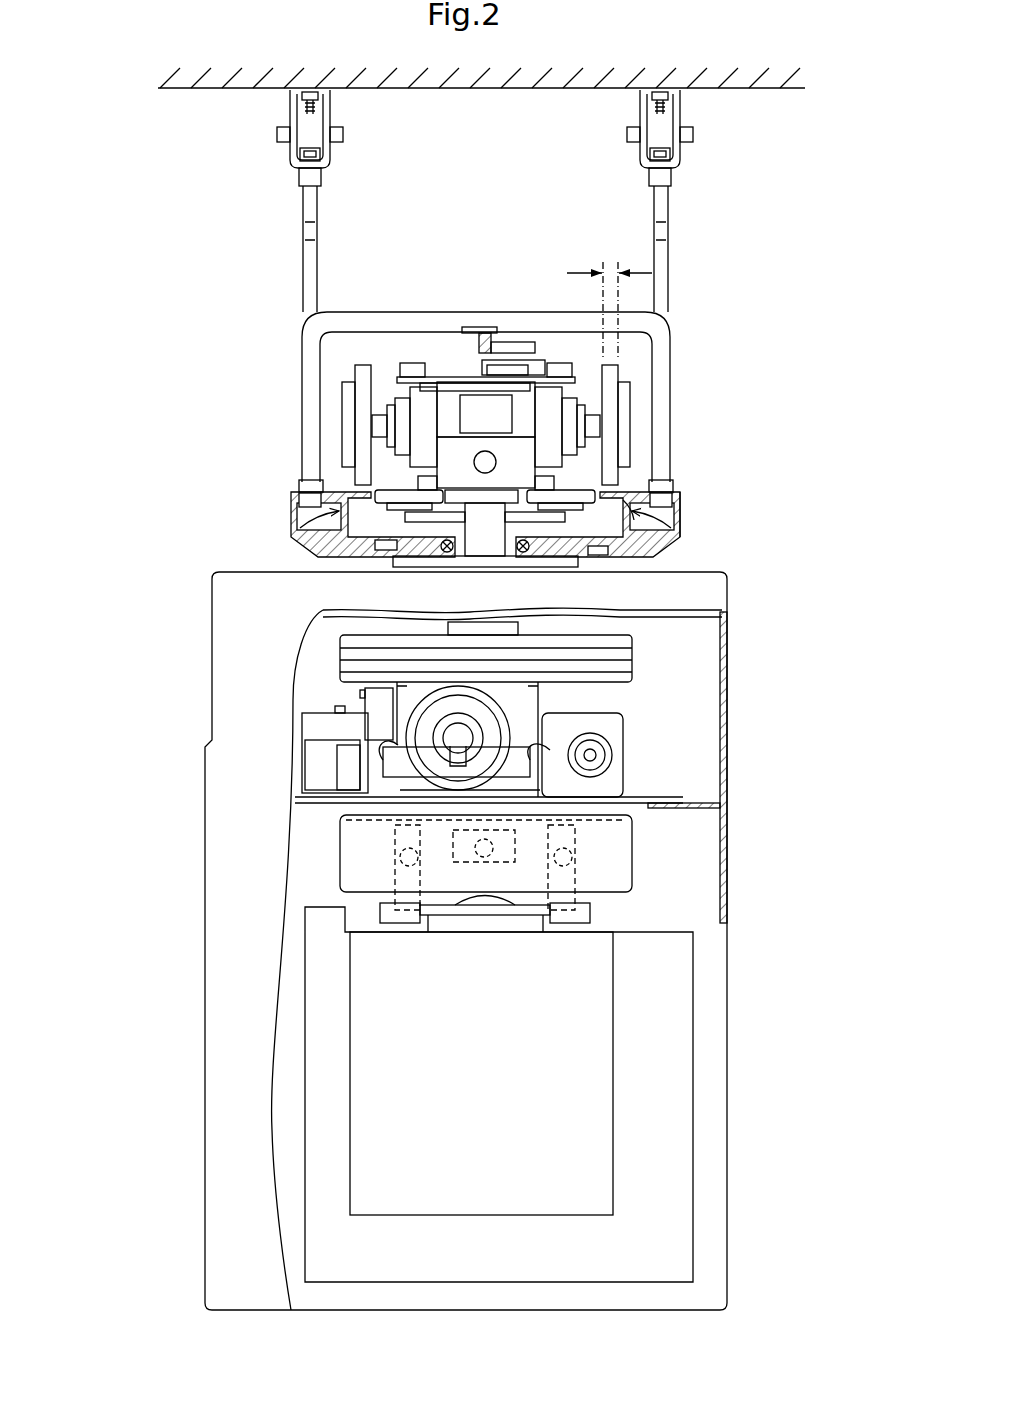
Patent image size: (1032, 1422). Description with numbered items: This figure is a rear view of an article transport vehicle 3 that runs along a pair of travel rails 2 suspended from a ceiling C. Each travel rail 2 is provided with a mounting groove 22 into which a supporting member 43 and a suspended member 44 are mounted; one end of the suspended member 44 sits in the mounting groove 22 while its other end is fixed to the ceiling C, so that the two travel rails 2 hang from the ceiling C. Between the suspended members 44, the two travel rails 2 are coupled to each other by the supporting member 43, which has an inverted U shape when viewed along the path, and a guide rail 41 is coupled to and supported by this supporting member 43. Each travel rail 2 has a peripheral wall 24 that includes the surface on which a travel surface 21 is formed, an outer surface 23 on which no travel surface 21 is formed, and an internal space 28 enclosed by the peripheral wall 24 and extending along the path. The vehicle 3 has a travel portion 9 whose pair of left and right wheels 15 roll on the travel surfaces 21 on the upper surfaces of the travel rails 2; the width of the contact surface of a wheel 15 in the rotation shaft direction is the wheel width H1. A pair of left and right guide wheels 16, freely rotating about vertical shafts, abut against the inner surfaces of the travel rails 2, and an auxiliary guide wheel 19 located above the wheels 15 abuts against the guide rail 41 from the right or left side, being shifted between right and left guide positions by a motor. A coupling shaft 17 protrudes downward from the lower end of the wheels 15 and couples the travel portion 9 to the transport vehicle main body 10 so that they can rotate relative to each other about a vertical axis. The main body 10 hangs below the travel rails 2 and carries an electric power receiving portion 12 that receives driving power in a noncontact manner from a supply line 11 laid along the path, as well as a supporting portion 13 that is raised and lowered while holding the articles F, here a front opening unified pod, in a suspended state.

The ceiling C is at (481, 96).
The article transport vehicle 3 is at (766, 287).
The travel portion 9 is at (356, 347).
The suspended member 44 is at (669, 250).
The supporting member 43 is at (367, 324).
The guide rail 41 is at (452, 347).
The auxiliary guide wheel 19 is at (513, 345).
The wheel width H1 is at (606, 268).
The wheel 15 is at (355, 377).
The guide wheel 16 is at (398, 495).
The coupling shaft 17 is at (490, 548).
The travel rail 2 is at (274, 498).
The travel surface 21 is at (634, 497).
The mounting groove 22 is at (657, 540).
The outer surface 23 is at (684, 522).
The peripheral wall 24 is at (620, 550).
The internal space 28 is at (333, 513).
The supply line 11 is at (447, 555).
The electric power receiving portion 12 is at (382, 564).
The transport vehicle main body 10 is at (212, 792).
The supporting portion 13 is at (673, 882).
The article F is at (677, 1080).